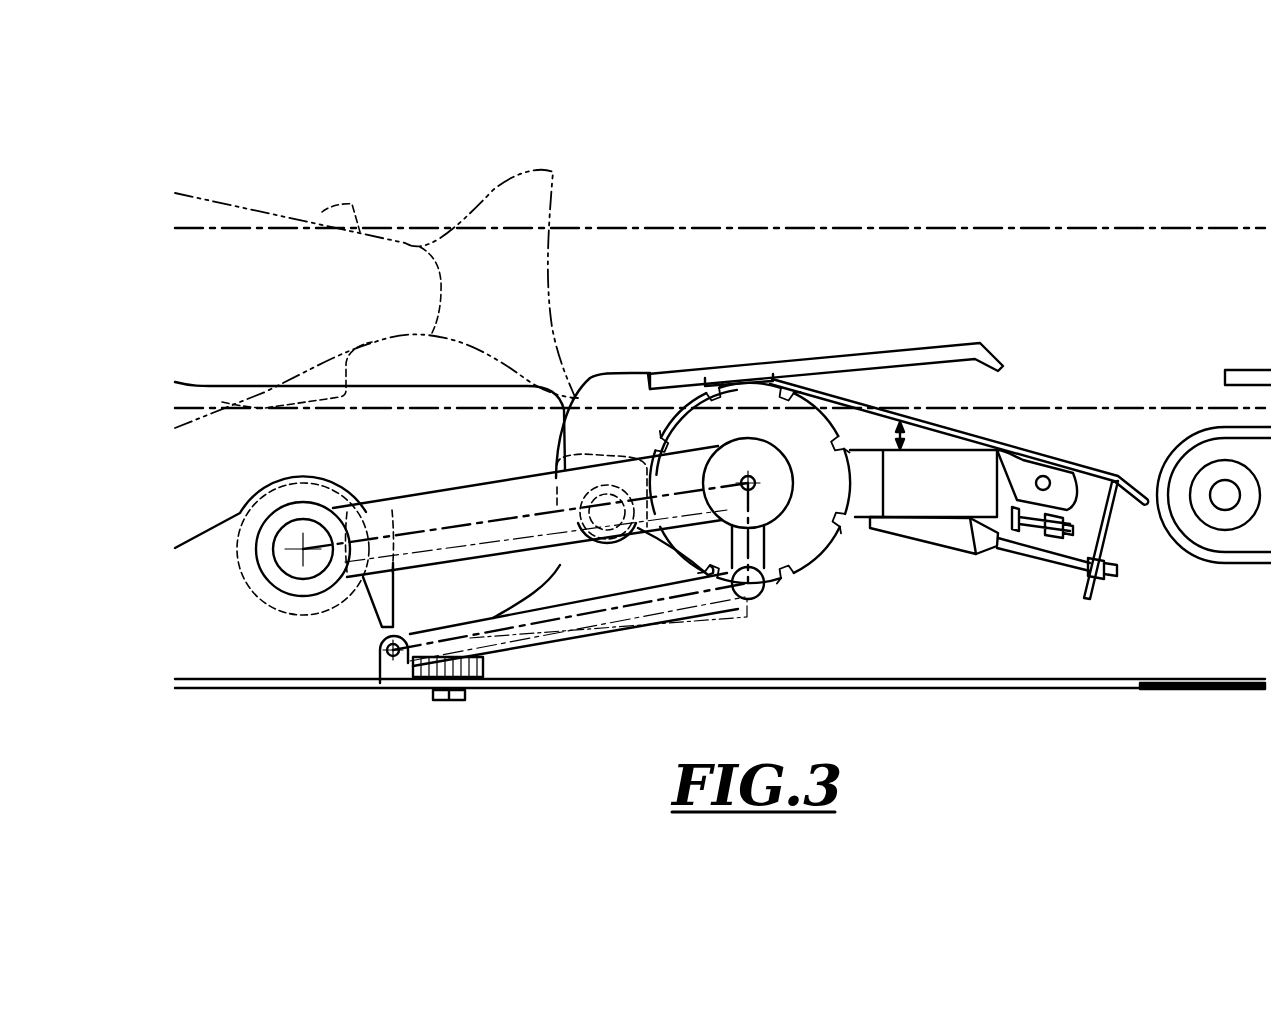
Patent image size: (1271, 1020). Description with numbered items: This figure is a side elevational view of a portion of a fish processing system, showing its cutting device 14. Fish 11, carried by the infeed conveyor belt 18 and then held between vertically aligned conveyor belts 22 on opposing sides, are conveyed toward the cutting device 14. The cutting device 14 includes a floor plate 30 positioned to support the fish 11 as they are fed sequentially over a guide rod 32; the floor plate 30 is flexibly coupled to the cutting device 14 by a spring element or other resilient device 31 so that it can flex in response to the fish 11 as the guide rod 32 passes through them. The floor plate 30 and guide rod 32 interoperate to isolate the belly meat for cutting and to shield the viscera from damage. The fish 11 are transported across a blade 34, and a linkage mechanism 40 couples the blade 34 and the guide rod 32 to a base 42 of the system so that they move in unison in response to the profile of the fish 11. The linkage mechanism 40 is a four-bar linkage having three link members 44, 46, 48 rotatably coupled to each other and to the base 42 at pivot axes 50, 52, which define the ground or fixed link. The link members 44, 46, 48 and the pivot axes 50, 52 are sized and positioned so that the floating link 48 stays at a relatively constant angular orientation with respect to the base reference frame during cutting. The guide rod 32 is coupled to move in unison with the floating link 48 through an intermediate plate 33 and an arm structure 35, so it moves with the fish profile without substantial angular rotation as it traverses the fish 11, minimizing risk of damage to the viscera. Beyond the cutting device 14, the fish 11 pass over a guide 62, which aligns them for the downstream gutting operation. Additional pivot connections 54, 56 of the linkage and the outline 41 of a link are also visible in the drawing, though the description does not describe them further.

The fish 11 is at (241, 208).
The cutting device 14 is at (1065, 158).
The infeed conveyor belt 18 is at (1220, 565).
The conveyor belts 22 is at (640, 226).
The floor plate 30 is at (1010, 447).
The resilient device 31 is at (943, 540).
The guide rod 32 is at (812, 360).
The intermediate plate 33 is at (612, 432).
The blade 34 is at (828, 560).
The arm structure 35 is at (557, 459).
The linkage mechanism 40 is at (668, 667).
The arm outline 41 is at (700, 622).
The base 42 is at (308, 683).
The link member 44 is at (442, 491).
The link member 46 is at (575, 628).
The floating link 48 is at (755, 543).
The pivot axis 50 is at (292, 560).
The pivot axis 52 is at (388, 657).
The roller 54 is at (750, 476).
The rod pivot 56 is at (756, 592).
The guide 62 is at (447, 602).